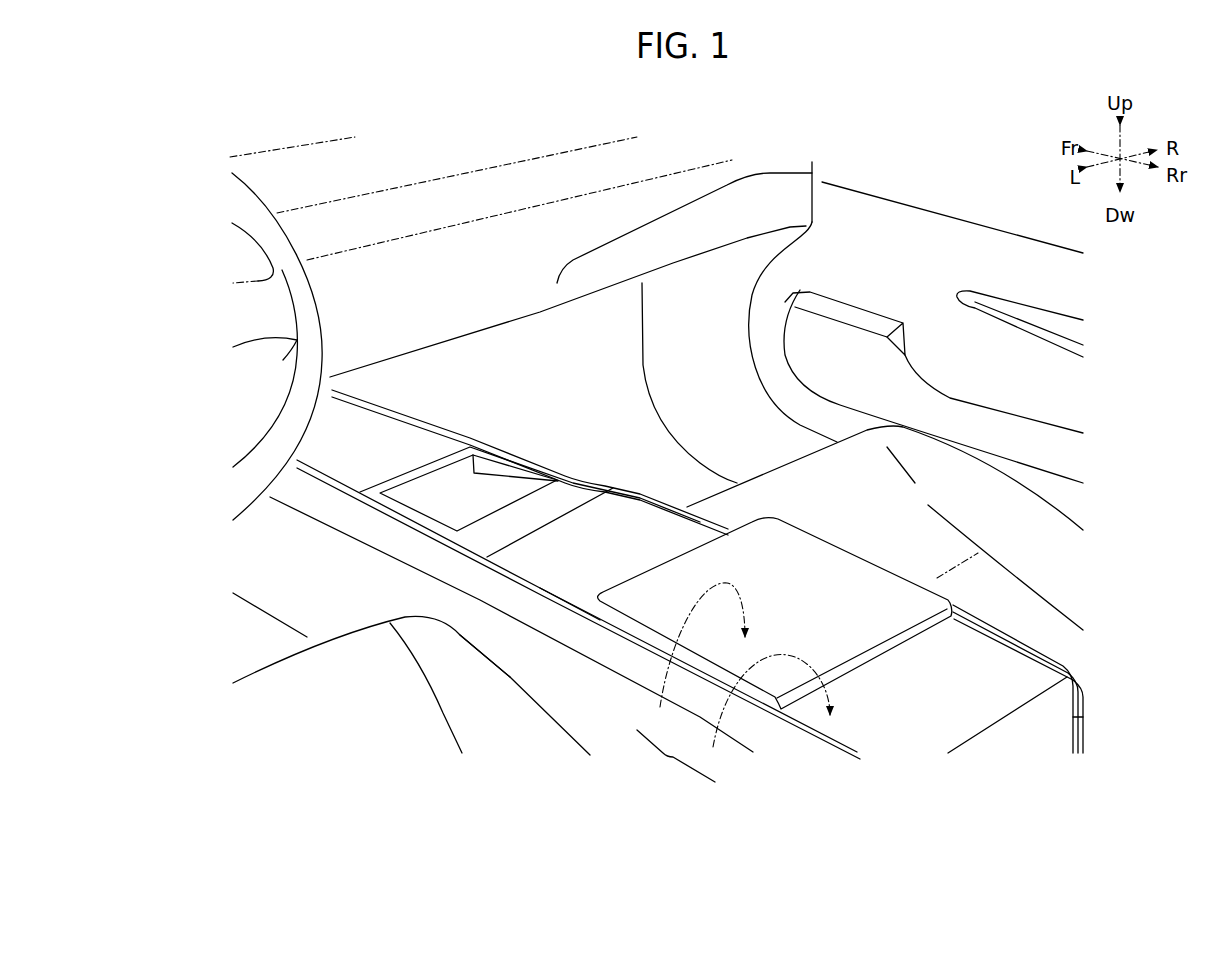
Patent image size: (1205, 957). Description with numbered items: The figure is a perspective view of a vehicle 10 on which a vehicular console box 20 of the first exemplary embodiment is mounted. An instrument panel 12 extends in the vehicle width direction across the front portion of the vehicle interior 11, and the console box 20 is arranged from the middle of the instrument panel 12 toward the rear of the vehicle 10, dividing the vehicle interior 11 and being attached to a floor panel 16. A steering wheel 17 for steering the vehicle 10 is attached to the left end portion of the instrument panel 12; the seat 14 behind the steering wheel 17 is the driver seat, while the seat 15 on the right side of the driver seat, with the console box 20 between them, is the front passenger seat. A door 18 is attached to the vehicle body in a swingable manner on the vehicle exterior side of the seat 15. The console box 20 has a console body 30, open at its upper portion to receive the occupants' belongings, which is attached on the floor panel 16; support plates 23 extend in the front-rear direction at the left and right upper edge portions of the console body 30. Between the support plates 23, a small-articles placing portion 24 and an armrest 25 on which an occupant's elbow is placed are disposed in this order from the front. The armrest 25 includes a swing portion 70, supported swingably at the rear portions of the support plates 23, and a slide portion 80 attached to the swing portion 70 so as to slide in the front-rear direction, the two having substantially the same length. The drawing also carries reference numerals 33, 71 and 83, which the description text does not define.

The vehicle 10 is at (848, 158).
The vehicle interior 11 is at (592, 367).
The instrument panel 12 is at (298, 170).
The seat 14 is at (340, 700).
The seat 15 is at (1016, 515).
The floor panel 16 is at (257, 655).
The steering wheel 17 is at (255, 187).
The door 18 is at (887, 240).
The vehicular console box 20 is at (507, 408).
The support plate 23 is at (1087, 670).
The small-articles placing portion 24 is at (500, 493).
The armrest 25 is at (676, 759).
The console body 30 is at (595, 706).
The side wall 33 is at (525, 650).
The swing portion 70 is at (761, 714).
The lid rear portion 71 is at (1007, 668).
The slide portion 80 is at (693, 658).
The armrest cushion 83 is at (827, 573).